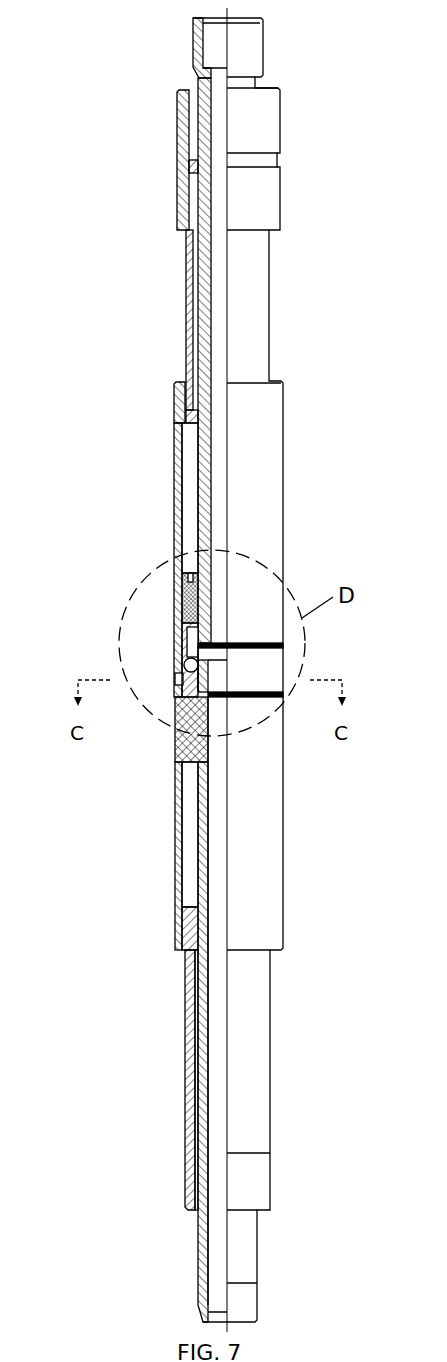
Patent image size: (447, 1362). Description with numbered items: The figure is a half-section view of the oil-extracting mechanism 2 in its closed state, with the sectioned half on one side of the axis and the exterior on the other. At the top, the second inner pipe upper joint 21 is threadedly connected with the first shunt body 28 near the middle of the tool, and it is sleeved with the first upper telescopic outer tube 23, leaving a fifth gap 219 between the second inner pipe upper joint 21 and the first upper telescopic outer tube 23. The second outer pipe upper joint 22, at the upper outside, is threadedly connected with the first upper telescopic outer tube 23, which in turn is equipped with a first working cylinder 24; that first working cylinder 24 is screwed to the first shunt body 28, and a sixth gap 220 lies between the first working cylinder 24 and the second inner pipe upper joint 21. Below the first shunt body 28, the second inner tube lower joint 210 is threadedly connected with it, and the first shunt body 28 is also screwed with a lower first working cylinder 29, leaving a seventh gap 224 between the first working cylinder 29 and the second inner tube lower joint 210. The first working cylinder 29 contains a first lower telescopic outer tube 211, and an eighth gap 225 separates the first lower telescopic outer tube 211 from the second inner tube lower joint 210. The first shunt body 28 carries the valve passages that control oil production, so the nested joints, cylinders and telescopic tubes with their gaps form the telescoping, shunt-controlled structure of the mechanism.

The oil-extracting mechanism 2 is at (115, 25).
The second inner pipe upper joint 21 is at (198, 62).
The second outer pipe upper joint 22 is at (178, 133).
The first upper telescopic outer tube 23 is at (188, 245).
The first working cylinder 24 is at (178, 452).
The first shunt body 28 is at (178, 727).
The first working cylinder 29 is at (177, 807).
The second inner tube lower joint 210 is at (202, 865).
The first lower telescopic outer tube 211 is at (188, 1053).
The fifth gap 219 is at (197, 285).
The sixth gap 220 is at (190, 482).
The seventh gap 224 is at (190, 778).
The eighth gap 225 is at (195, 1083).